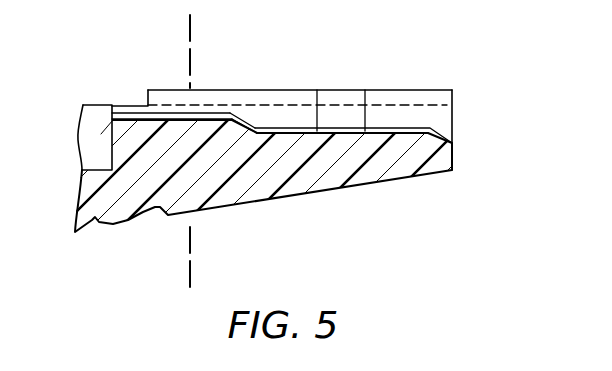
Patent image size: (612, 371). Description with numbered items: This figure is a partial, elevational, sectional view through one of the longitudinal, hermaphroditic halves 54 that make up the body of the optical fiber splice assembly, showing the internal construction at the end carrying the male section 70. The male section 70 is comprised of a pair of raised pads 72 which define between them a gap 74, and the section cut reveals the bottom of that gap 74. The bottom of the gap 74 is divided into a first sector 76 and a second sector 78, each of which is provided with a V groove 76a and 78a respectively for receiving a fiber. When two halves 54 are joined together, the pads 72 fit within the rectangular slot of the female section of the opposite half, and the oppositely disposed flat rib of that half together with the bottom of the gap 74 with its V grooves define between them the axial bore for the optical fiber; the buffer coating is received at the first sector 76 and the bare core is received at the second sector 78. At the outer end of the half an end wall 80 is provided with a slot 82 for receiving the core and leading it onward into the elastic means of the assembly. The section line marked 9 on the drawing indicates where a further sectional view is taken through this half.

The hermaphroditic half 54 is at (356, 213).
The male section 70 is at (493, 75).
The raised pads 72 is at (433, 91).
The gap 74 is at (452, 126).
The first sector 76 is at (317, 90).
The V groove 76a is at (365, 90).
The second sector 78 is at (211, 118).
The V groove 78a is at (227, 118).
The end wall 80 is at (112, 132).
The slot 82 is at (128, 110).
The section line 9- 9 is at (190, 15).